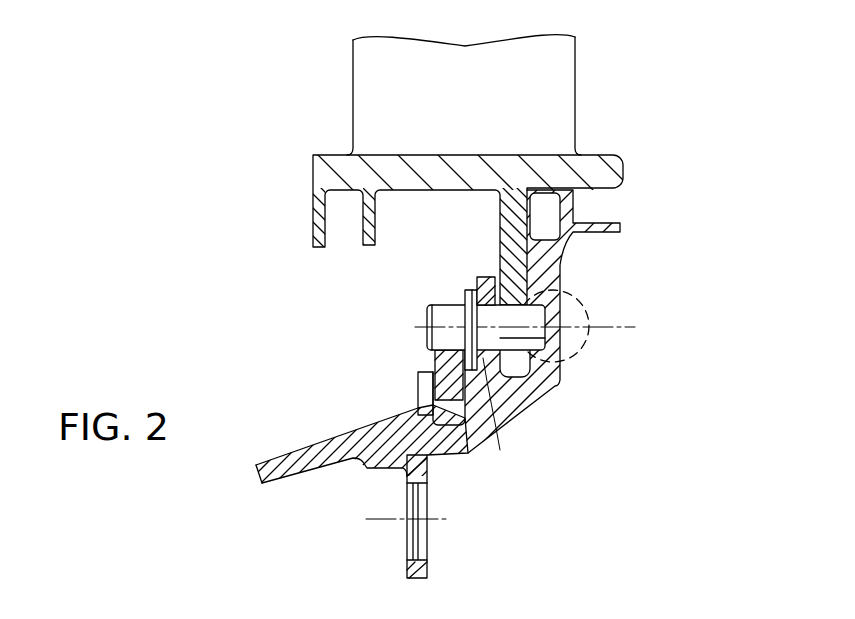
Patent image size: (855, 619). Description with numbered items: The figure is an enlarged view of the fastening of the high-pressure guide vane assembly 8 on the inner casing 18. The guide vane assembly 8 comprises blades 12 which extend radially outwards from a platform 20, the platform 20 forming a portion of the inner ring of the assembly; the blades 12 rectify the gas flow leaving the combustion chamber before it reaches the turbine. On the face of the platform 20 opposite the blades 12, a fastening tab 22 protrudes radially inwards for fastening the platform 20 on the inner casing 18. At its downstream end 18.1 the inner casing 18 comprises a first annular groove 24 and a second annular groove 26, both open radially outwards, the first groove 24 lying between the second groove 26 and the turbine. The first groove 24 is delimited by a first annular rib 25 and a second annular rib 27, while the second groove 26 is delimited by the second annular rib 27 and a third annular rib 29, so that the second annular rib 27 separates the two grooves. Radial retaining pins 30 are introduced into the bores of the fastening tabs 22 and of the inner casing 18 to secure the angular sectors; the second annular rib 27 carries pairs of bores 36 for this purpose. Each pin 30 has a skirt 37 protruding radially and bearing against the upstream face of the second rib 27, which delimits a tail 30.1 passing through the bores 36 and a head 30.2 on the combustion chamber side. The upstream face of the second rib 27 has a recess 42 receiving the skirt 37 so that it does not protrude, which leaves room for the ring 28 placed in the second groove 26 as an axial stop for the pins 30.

The guide vane assembly 8 is at (600, 46).
The blades 12 is at (563, 108).
The platform 20 is at (600, 173).
The fastening tab 22 is at (513, 263).
The first annular rib 25 is at (550, 280).
The first annular groove 24 is at (525, 383).
The inner casing 18 is at (551, 340).
The downstream end 18.1 is at (453, 443).
The second annular groove 26 is at (443, 415).
The second annular rib 27 is at (515, 398).
The ring 28 is at (443, 367).
The third annular rib 29 is at (427, 397).
The radial retaining pin 30 is at (487, 283).
The tail 30.1 is at (530, 337).
The head 30.2 is at (443, 310).
The bores 36 is at (485, 297).
The skirt 37 is at (443, 333).
The recess 42 is at (483, 360).